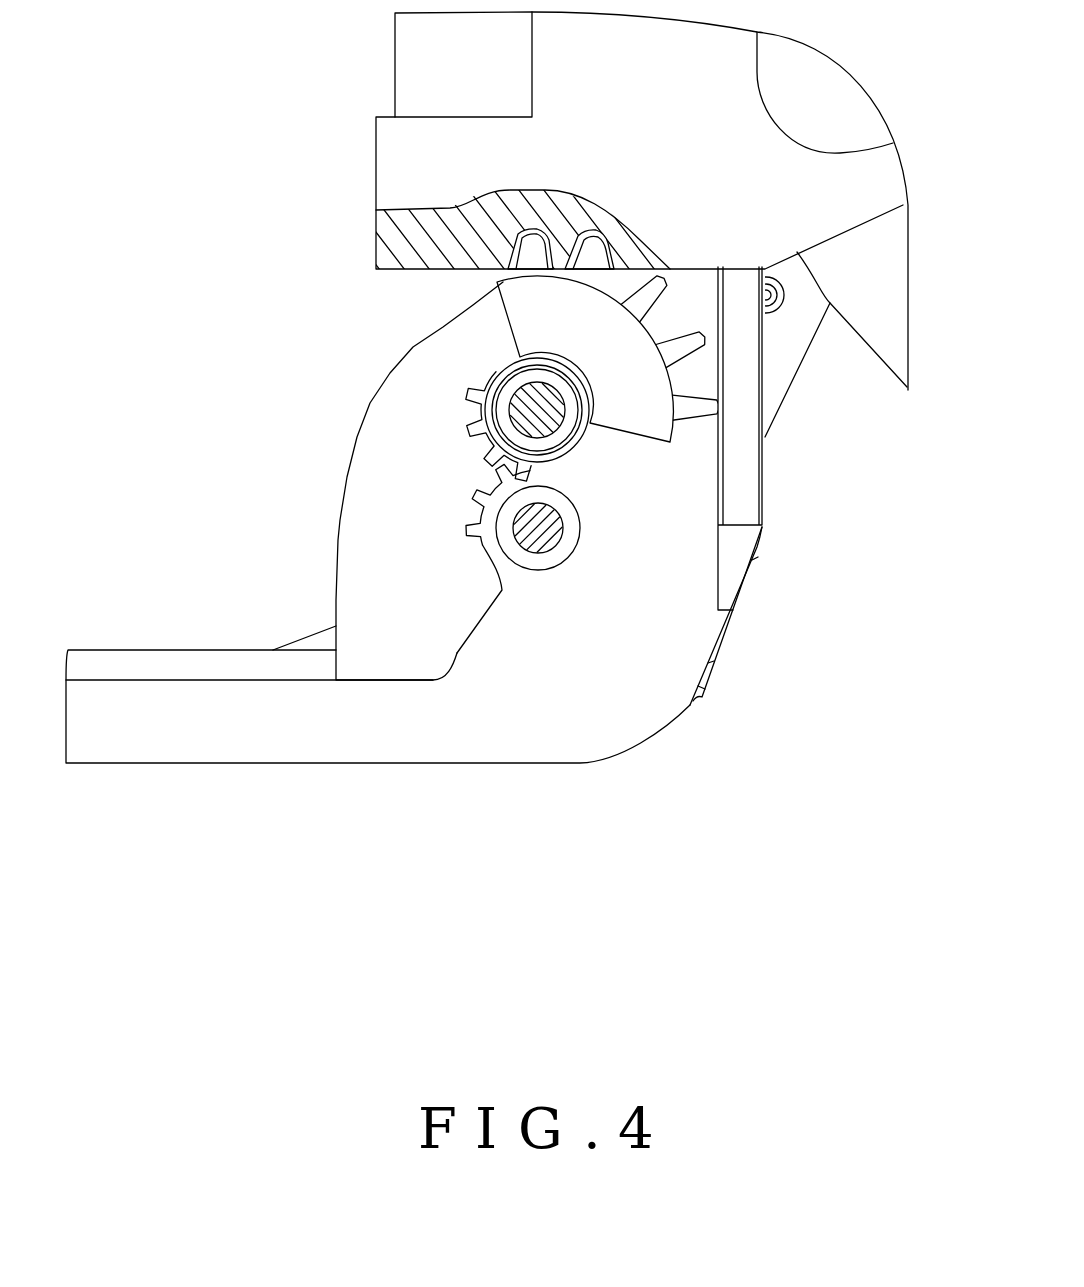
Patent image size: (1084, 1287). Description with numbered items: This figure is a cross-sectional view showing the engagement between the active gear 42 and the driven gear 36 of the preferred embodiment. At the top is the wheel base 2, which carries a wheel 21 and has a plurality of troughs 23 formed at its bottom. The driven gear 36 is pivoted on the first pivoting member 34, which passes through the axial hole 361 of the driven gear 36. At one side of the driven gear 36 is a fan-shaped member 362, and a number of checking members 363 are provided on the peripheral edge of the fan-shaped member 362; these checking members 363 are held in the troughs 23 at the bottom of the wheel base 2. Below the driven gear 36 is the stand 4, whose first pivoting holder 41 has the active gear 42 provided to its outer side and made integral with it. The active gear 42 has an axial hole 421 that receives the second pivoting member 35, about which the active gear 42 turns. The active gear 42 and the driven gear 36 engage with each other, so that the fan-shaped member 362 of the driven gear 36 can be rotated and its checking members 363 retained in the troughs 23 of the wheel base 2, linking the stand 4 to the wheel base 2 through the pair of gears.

The wheel base 2 is at (569, 59).
The wheel 21 is at (872, 320).
The troughs 23 is at (517, 249).
The first pivoting member 34 is at (512, 393).
The second pivoting member 35 is at (538, 532).
The driven gear 36 is at (475, 429).
The axial hole 361 is at (508, 412).
The fan-shaped member 362 is at (625, 395).
The checking members 363 is at (518, 262).
The stand 4 is at (138, 733).
The first pivoting holder 41 is at (372, 525).
The active gear 42 is at (500, 519).
The axial hole 421 is at (532, 553).